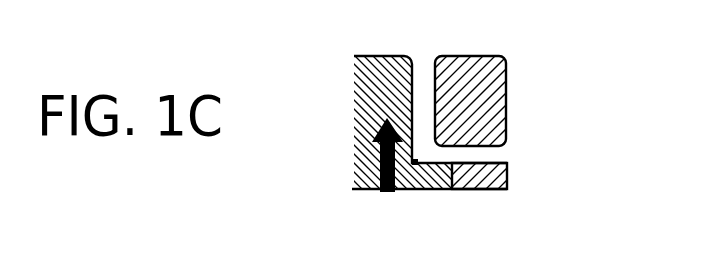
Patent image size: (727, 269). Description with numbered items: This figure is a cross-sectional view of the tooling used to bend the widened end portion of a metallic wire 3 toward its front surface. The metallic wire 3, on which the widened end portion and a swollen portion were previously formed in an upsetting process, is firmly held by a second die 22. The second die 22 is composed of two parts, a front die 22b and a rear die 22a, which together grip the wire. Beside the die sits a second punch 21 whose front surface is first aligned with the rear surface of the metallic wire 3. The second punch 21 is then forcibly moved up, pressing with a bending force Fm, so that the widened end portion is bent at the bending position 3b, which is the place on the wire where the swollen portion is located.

The second punch 21 is at (364, 90).
The second die 22 is at (600, 65).
The rear die 22a is at (507, 175).
The front die 22b is at (507, 87).
The metallic wire 3 is at (425, 78).
The bending position 3b is at (427, 150).
The bending force Fm is at (368, 178).